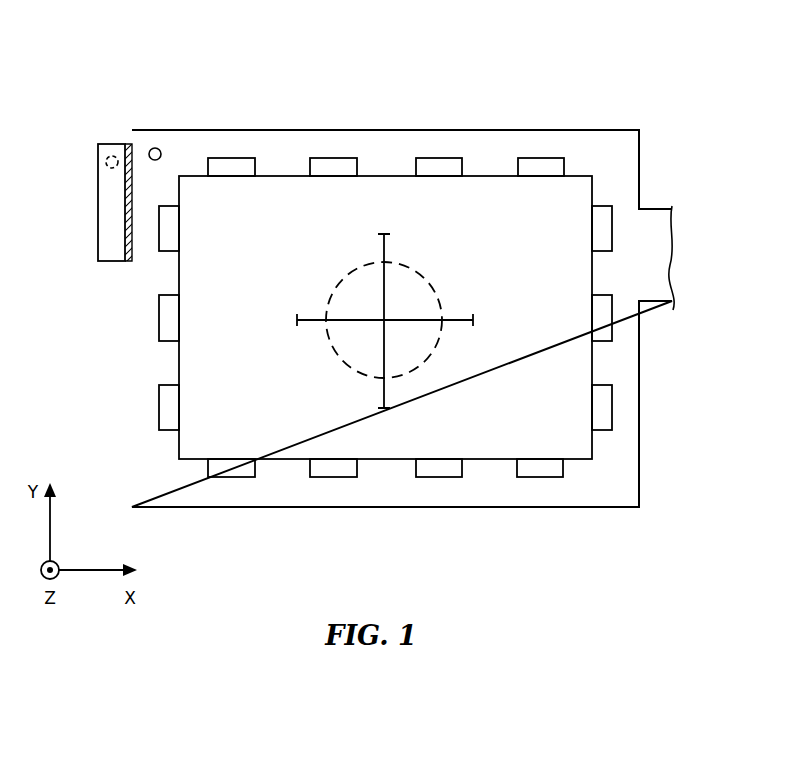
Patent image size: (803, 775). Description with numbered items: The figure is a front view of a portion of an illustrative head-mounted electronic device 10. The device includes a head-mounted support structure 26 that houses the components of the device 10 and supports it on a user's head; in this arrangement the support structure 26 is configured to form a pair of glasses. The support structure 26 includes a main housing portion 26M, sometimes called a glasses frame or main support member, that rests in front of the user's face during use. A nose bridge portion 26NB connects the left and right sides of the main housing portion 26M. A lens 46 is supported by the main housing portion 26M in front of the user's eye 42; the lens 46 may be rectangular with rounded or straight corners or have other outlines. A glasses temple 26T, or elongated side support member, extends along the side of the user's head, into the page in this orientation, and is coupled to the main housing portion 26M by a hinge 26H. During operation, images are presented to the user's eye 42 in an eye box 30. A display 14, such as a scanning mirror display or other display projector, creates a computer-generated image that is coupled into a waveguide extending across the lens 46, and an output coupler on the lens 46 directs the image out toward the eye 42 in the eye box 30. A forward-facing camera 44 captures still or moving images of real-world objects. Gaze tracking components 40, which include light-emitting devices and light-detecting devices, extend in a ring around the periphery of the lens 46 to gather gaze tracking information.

The electronic device 10 is at (604, 62).
The display 14 is at (105, 161).
The head-mounted support structure 26 is at (207, 130).
The glasses temple 26T is at (108, 212).
The hinge 26H is at (128, 263).
The nose bridge portion 26NB is at (657, 209).
The main housing portion 26M is at (625, 470).
The eye box 30 is at (382, 401).
The gaze tracking components 40 is at (230, 158).
The eye 42 is at (438, 290).
The forward-facing camera 44 is at (155, 148).
The lens 46 is at (497, 438).